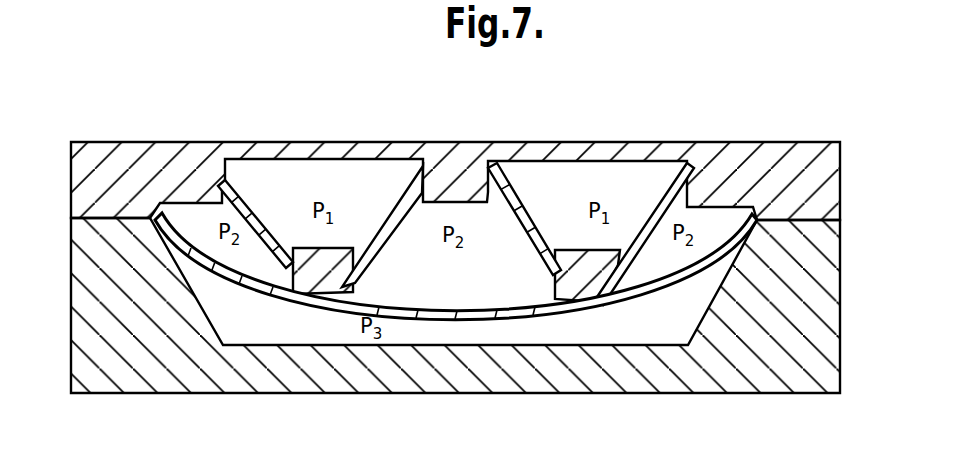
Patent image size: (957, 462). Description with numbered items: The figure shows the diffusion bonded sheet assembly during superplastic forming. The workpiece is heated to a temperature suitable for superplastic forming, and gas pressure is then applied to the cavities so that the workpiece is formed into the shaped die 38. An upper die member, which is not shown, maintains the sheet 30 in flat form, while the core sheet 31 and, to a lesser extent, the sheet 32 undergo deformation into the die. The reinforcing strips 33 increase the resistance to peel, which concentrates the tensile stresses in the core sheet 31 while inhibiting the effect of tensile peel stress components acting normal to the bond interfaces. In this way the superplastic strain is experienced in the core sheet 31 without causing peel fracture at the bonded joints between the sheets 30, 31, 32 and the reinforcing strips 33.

The sheet 30 is at (240, 142).
The core sheet 31 is at (257, 212).
The sheet 32 is at (446, 313).
The reinforcing strips 33 is at (500, 161).
The shaped die 38 is at (331, 394).